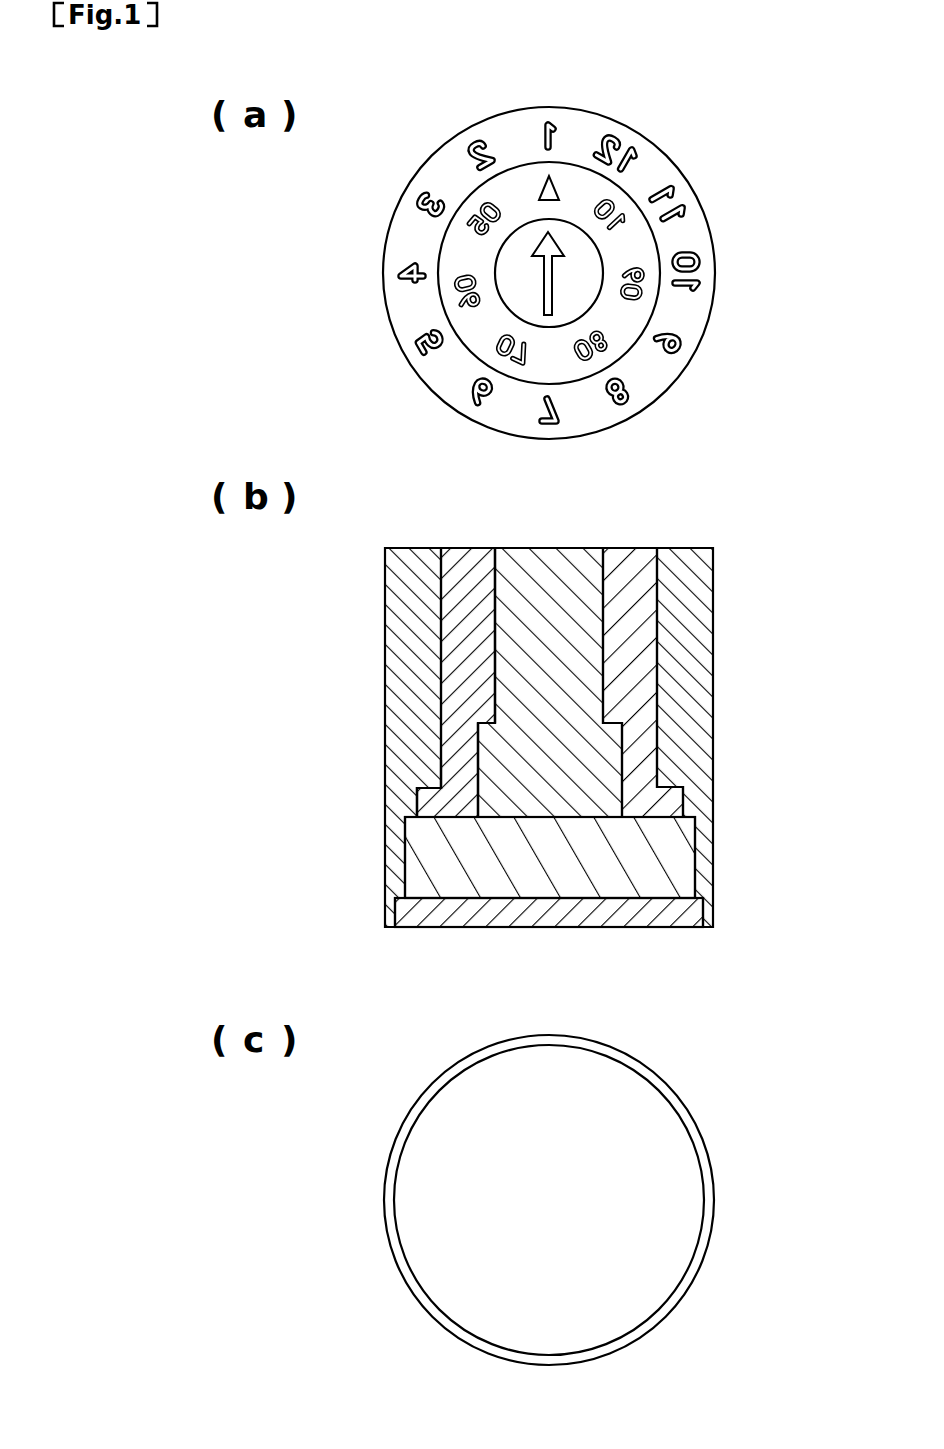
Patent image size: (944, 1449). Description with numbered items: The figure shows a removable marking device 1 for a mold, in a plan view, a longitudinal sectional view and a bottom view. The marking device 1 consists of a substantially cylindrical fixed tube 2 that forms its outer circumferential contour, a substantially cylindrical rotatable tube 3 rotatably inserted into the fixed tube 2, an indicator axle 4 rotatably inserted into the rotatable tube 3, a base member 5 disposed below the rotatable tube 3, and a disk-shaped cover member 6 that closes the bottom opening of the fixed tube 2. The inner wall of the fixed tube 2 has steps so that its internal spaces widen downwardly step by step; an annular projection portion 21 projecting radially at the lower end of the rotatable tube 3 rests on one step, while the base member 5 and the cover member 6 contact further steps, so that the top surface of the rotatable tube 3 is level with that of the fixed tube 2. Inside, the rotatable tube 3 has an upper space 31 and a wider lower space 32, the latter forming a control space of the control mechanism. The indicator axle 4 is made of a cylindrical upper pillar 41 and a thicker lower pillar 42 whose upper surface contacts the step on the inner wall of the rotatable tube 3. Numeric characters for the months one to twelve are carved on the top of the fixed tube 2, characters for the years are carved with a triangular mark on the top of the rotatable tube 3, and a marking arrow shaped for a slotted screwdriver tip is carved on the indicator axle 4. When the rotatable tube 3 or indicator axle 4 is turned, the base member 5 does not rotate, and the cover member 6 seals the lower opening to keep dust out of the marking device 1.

The marking device 1 is at (693, 141).
The fixed tube 2 is at (697, 327).
The annular projection portion 21 is at (417, 796).
The rotatable tube 3 is at (570, 173).
The upper space 31 is at (494, 625).
The lower space 32 is at (478, 735).
The indicator axle 4 is at (592, 262).
The upper pillar 41 is at (495, 590).
The lower pillar 42 is at (486, 808).
The base member 5 is at (682, 857).
The cover member 6 is at (603, 918).